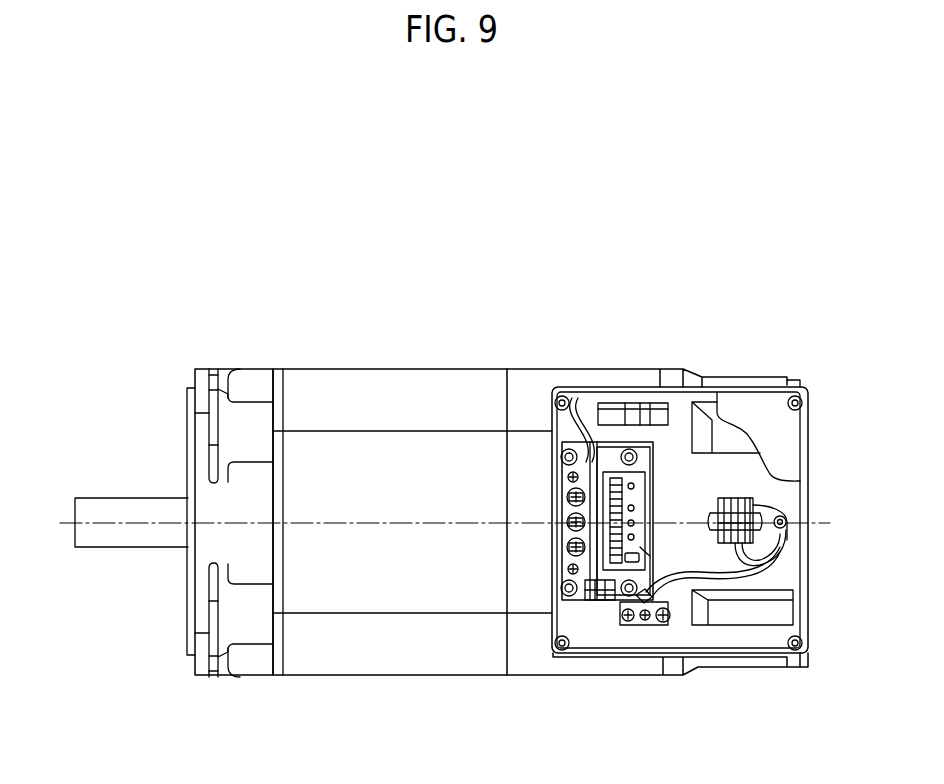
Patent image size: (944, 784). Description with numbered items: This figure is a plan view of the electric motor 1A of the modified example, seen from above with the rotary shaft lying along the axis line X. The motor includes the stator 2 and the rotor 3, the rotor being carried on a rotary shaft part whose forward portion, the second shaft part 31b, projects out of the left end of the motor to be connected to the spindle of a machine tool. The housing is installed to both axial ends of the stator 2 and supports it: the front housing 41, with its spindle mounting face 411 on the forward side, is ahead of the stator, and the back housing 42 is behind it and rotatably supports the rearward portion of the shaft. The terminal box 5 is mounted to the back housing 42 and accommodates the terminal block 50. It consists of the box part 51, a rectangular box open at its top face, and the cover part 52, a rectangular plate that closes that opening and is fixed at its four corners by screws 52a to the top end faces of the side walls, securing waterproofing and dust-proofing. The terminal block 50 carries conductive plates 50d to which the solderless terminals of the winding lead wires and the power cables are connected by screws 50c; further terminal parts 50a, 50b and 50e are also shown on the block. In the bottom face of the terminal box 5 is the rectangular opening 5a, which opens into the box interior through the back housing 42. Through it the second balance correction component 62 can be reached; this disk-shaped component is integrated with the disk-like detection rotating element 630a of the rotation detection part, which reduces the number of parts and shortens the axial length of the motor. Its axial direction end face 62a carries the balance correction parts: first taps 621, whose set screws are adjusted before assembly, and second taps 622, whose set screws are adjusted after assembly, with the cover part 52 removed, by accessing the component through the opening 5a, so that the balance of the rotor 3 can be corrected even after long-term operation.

The electric motor 1A is at (595, 156).
The axis line X is at (63, 532).
The stator 2 is at (400, 392).
The rotor 3 is at (385, 490).
The second shaft part 31b is at (104, 504).
The front housing 41 is at (228, 367).
The spindle mounting face 411 is at (188, 410).
The back housing 42 is at (520, 368).
The terminal box 5 is at (814, 426).
The opening 5a is at (645, 550).
The terminal block 50 is at (603, 612).
The terminal screw 50a is at (564, 552).
The terminal screw 50b is at (576, 432).
The screws 50c is at (562, 492).
The conductive plates 50d is at (592, 572).
The cable entry 50e is at (597, 455).
The box part 51 is at (708, 396).
The cover part 52 is at (760, 407).
The screws 52a is at (793, 380).
The second balance correction component 62 is at (648, 496).
The axial direction end face 62a is at (660, 545).
The first taps 621 is at (650, 540).
The second taps 622 is at (634, 488).
The detection rotating element 630a is at (618, 566).